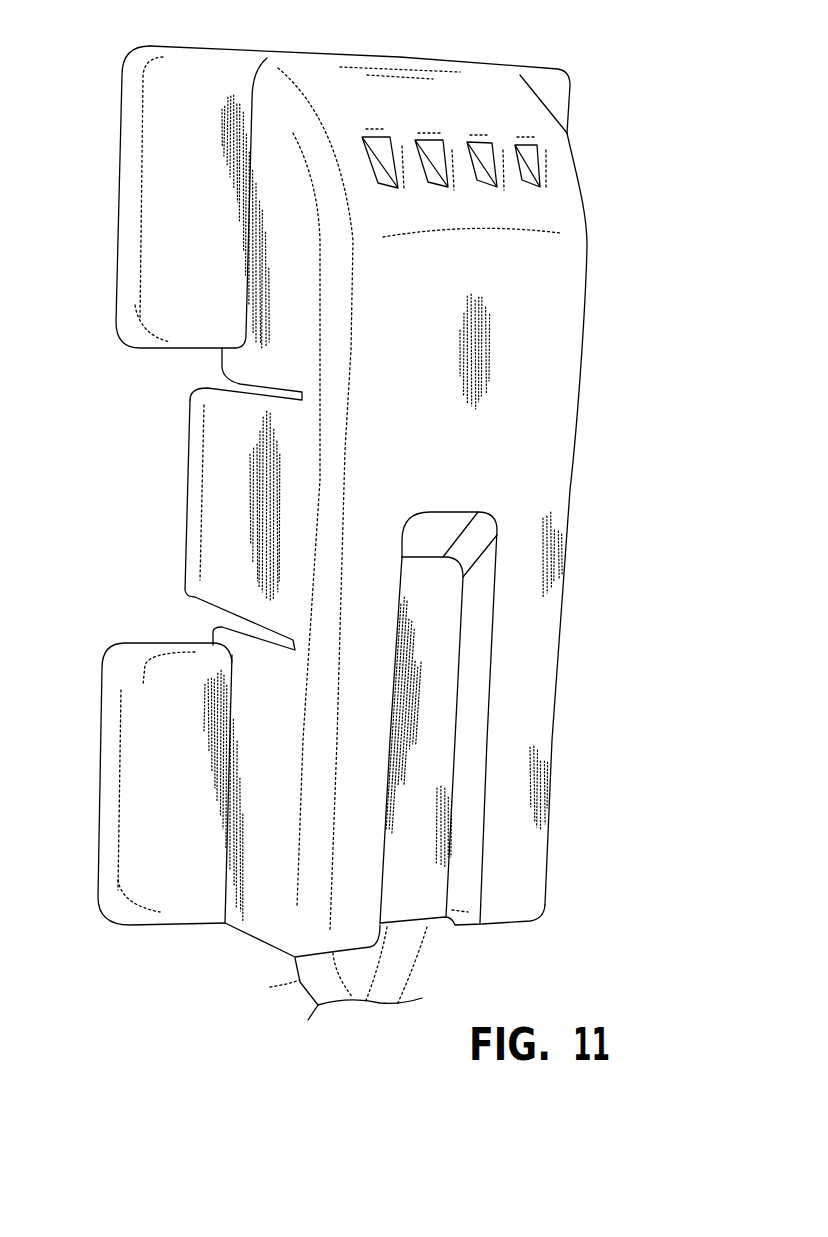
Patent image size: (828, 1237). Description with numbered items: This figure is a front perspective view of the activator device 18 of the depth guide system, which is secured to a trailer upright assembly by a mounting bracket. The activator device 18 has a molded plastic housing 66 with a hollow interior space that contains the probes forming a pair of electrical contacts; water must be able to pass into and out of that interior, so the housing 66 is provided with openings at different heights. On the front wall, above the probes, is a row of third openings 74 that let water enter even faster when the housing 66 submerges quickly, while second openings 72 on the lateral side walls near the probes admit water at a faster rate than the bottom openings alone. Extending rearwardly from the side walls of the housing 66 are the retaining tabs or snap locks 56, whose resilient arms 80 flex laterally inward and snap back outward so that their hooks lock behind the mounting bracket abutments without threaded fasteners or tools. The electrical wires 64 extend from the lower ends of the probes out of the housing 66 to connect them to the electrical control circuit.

The activator device 18 is at (622, 94).
The third openings 74 is at (430, 133).
The housing 66 is at (580, 383).
The second openings 72 is at (174, 373).
The snap locks 56 is at (174, 437).
The arms 80 is at (219, 493).
The electrical wires 64 is at (300, 983).